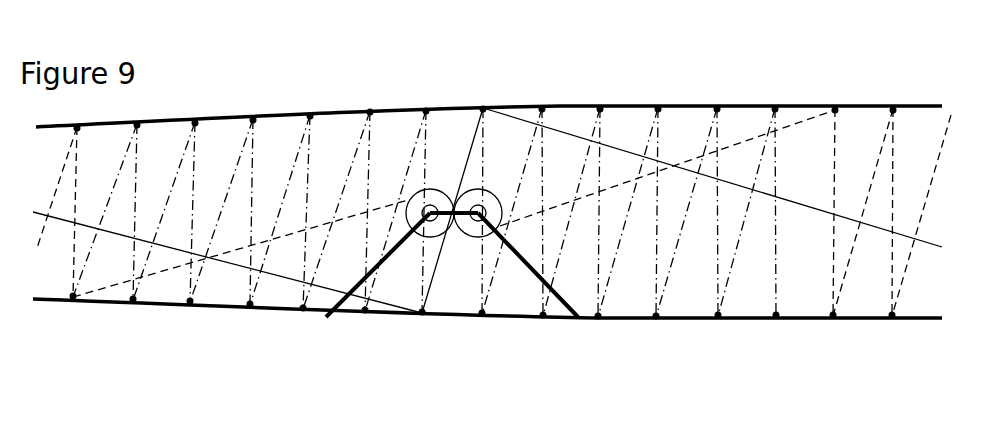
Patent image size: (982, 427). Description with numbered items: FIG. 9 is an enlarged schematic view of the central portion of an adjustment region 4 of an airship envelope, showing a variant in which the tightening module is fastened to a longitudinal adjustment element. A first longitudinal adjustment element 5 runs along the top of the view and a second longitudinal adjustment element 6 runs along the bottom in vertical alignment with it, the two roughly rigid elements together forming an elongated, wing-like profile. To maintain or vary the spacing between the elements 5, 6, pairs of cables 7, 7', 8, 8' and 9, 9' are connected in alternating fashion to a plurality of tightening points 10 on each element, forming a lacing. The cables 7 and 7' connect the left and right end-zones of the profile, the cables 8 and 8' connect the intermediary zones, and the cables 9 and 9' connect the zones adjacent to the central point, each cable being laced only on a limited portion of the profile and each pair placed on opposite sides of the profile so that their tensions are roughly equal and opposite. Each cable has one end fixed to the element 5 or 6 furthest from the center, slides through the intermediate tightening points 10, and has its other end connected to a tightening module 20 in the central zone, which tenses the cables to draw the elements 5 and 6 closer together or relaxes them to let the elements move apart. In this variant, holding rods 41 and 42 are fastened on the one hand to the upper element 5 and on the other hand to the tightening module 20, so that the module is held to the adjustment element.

The adjustment region 4 is at (597, 82).
The first longitudinal adjustment element 5 is at (327, 107).
The second longitudinal adjustment element 6 is at (337, 318).
The cable 7 is at (487, 241).
The cable 7' is at (452, 182).
The cable 8 is at (240, 277).
The cable 8' is at (667, 143).
The cable 9 is at (406, 191).
The cable 9' is at (865, 188).
The tightening point 10 is at (250, 122).
The tightening module 20 is at (453, 228).
The holding rod 41 is at (414, 231).
The holding rod 42 is at (497, 231).